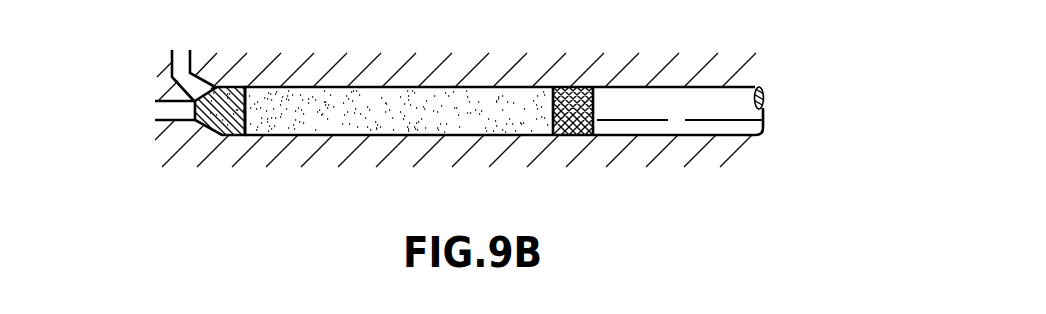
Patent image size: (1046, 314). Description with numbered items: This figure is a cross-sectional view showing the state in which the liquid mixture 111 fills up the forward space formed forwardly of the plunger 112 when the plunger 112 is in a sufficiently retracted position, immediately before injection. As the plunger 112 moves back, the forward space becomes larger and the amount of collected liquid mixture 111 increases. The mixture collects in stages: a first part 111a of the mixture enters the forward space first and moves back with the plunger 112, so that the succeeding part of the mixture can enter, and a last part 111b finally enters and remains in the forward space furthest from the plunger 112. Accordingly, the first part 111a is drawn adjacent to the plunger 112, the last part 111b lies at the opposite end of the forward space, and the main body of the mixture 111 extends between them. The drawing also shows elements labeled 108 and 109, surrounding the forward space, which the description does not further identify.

The lead wire 108 is at (177, 69).
The sealing member 109 is at (327, 155).
The liquid mixture 111 is at (417, 127).
The first part of the mixture 111a is at (568, 135).
The last part of the mixture 111b is at (217, 130).
The plunger 112 is at (663, 125).